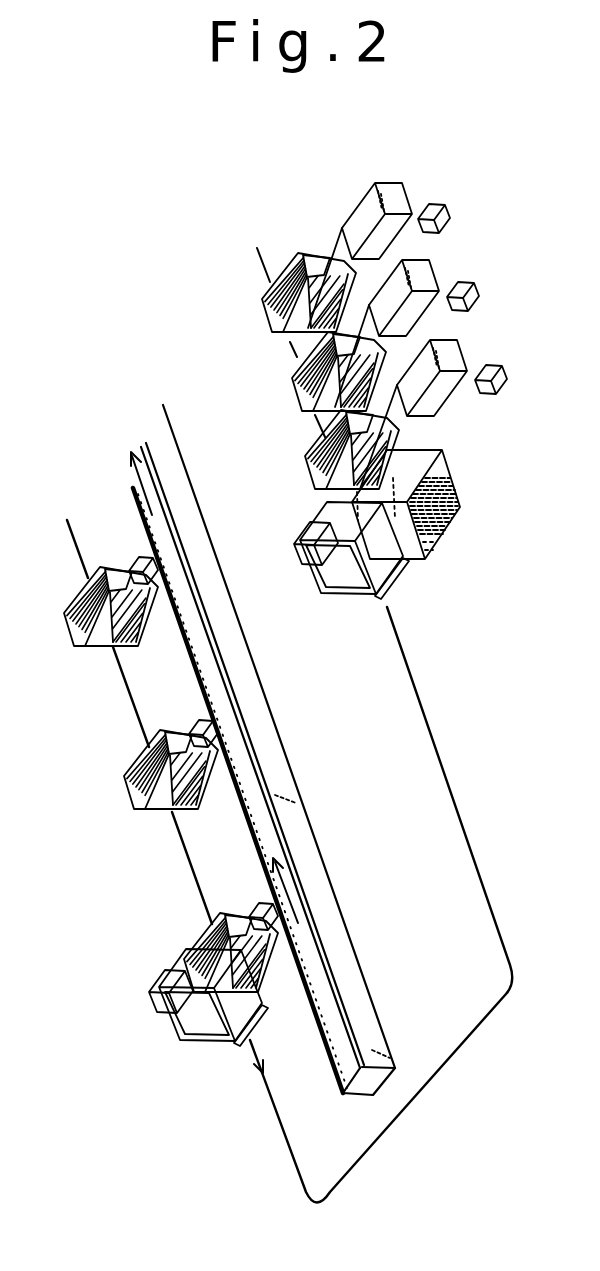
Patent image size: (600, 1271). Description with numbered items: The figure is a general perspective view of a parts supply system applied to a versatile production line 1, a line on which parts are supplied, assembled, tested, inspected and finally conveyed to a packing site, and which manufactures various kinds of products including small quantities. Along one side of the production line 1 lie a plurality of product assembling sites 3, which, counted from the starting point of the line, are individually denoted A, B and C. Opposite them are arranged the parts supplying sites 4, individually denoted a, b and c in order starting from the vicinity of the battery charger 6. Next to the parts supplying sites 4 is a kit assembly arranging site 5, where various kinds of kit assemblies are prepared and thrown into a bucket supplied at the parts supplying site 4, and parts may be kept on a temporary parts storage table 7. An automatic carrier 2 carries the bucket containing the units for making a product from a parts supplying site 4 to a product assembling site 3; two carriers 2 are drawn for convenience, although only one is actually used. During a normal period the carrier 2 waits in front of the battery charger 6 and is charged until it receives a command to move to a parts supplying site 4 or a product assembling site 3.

The versatile production line 1 is at (133, 488).
The automatic carrier 2 is at (314, 519).
The product assembling site 3 is at (66, 610).
The parts supplying site 4 is at (318, 441).
The kit assembly arranging site 5 is at (402, 184).
The battery charger 6 is at (440, 532).
The temporary parts storage table 7 is at (498, 380).
The product assembling site A is at (222, 913).
The product assembling site B is at (160, 735).
The product assembling site C is at (95, 567).
The parts supplying site a is at (317, 488).
The parts supplying site b is at (292, 380).
The parts supplying site c is at (262, 303).